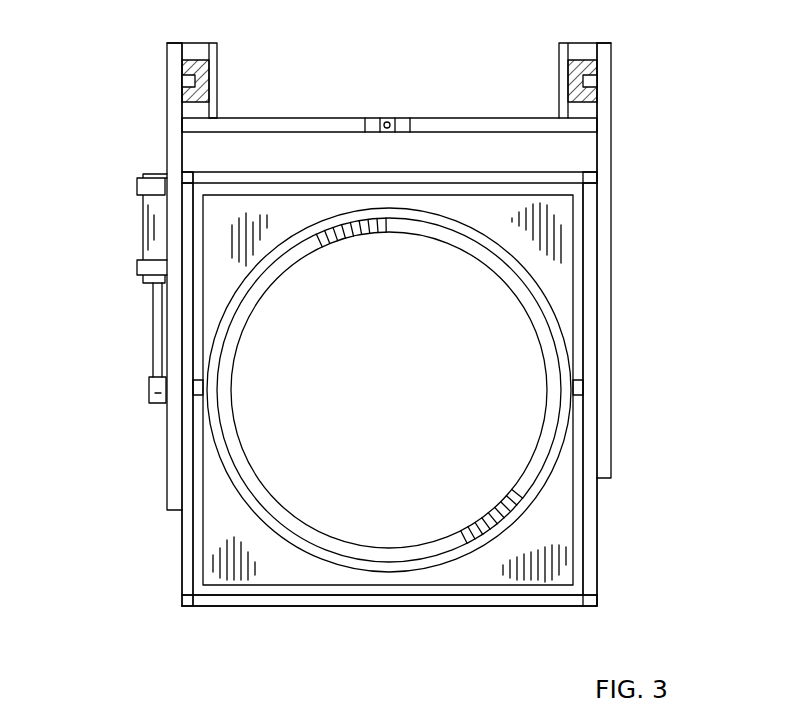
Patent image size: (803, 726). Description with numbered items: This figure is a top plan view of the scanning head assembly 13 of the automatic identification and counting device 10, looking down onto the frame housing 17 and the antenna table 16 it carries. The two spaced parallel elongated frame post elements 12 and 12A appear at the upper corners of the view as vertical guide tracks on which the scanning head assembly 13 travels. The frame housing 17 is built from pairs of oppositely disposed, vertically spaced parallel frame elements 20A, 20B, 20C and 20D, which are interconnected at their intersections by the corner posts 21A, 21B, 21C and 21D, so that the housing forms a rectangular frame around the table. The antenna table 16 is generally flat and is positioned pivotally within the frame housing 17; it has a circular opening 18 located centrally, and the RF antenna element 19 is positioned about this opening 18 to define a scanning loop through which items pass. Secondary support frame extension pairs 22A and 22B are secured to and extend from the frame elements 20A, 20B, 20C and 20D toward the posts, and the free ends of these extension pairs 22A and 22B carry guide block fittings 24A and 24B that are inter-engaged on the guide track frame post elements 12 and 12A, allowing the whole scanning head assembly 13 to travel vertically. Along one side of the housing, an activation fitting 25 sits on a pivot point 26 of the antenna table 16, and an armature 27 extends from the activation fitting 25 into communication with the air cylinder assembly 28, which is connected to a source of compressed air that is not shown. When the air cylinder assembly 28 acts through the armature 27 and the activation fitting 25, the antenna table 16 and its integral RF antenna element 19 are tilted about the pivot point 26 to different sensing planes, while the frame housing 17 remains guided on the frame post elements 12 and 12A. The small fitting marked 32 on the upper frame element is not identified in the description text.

The automatic identification and counting device 10 is at (673, 113).
The frame post element 12 is at (186, 64).
The frame post element 12A is at (598, 60).
The scanning head assembly 13 is at (622, 216).
The antenna table 16 is at (512, 233).
The frame housing 17 is at (585, 262).
The circular opening 18 is at (404, 424).
The RF antenna element 19 is at (272, 258).
The frame element 20A is at (185, 549).
The frame element 20B is at (592, 553).
The frame element 20C is at (497, 603).
The frame element 20D is at (433, 175).
The corner post 21A is at (187, 178).
The corner post 21B is at (185, 600).
The corner post 21C is at (590, 176).
The corner post 21D is at (590, 597).
The secondary support frame extension pair 22A is at (176, 477).
The secondary support frame extension pair 22B is at (605, 445).
The guide block fitting 24A is at (167, 82).
The guide block fitting 24B is at (611, 77).
The activation fitting 25 is at (149, 392).
The pivot point 26 is at (196, 395).
The armature 27 is at (153, 347).
The air cylinder assembly 28 is at (143, 238).
The hinge 32 is at (388, 118).